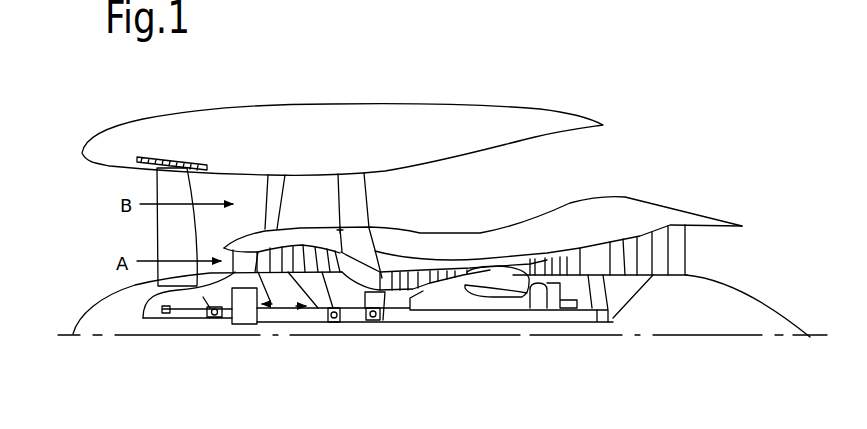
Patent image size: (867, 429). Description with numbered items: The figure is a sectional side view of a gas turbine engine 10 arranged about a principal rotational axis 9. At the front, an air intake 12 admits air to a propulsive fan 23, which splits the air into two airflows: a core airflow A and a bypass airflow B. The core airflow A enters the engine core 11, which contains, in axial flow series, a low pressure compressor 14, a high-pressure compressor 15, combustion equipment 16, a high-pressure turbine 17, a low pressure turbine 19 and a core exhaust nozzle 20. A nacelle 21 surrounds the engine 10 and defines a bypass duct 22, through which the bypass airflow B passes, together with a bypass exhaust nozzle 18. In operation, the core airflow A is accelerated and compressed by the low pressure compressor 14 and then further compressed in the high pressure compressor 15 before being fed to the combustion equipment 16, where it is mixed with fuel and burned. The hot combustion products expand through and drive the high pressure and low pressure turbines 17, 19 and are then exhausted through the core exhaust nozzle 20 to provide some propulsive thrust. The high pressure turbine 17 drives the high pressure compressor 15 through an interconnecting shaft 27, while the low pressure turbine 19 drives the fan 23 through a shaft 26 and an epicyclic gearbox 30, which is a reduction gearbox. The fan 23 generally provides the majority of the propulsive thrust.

The principal rotational axis 9 is at (655, 336).
The gas turbine engine 10 is at (143, 120).
The core 11 is at (477, 232).
The air intake 12 is at (90, 193).
The low pressure compressor 14 is at (303, 248).
The high-pressure compressor 15 is at (427, 273).
The combustion equipment 16 is at (503, 280).
The high-pressure turbine 17 is at (547, 260).
The bypass exhaust nozzle 18 is at (660, 160).
The low pressure turbine 19 is at (662, 242).
The core exhaust nozzle 20 is at (720, 258).
The nacelle 21 is at (360, 122).
The bypass duct 22 is at (585, 176).
The propulsive fan 23 is at (162, 231).
The shaft 26 is at (420, 325).
The interconnecting shaft 27 is at (458, 313).
The epicyclic gearbox 30 is at (242, 310).